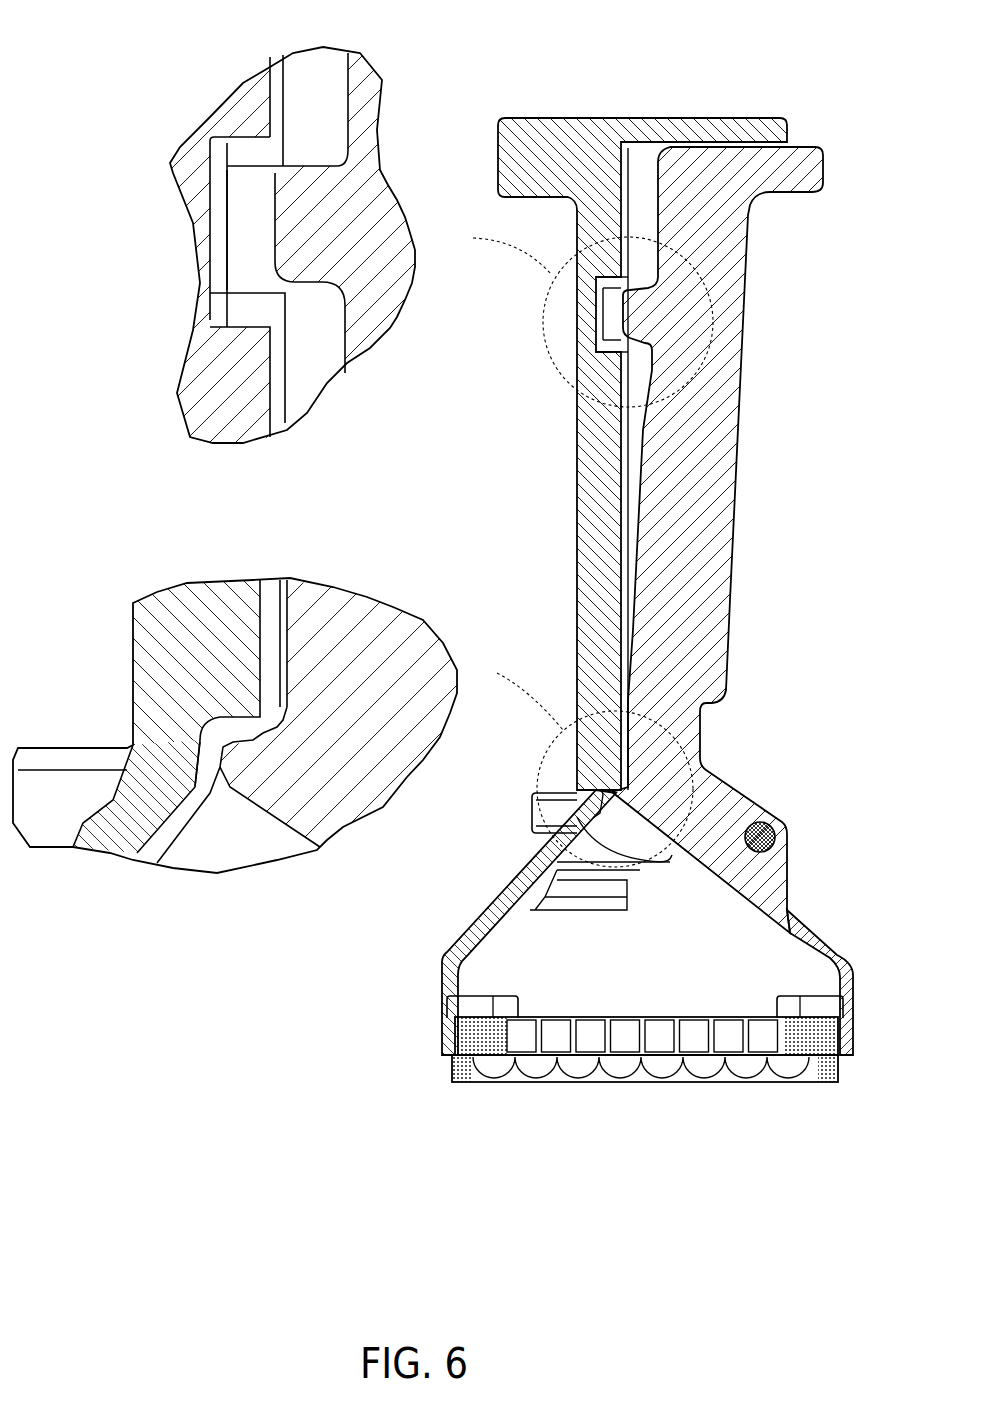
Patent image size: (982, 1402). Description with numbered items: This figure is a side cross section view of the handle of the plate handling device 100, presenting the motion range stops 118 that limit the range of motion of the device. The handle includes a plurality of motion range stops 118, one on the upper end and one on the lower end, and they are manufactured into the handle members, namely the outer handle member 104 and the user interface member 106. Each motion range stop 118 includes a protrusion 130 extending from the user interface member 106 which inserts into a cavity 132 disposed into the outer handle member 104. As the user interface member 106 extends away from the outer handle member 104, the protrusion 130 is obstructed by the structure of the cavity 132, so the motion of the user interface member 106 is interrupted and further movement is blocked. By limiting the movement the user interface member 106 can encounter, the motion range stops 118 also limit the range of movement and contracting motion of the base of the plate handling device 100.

The plate handling device 100 is at (782, 57).
The outer handle member 104 is at (596, 527).
The user interface member 106 is at (705, 423).
The motion range stops 118 is at (620, 318).
The protrusion 130 is at (300, 225).
The cavity 132 is at (237, 253).